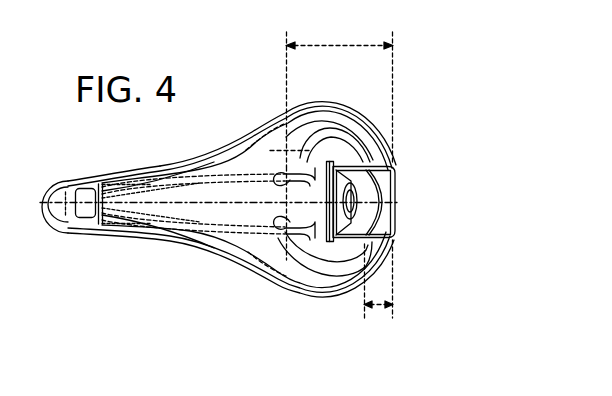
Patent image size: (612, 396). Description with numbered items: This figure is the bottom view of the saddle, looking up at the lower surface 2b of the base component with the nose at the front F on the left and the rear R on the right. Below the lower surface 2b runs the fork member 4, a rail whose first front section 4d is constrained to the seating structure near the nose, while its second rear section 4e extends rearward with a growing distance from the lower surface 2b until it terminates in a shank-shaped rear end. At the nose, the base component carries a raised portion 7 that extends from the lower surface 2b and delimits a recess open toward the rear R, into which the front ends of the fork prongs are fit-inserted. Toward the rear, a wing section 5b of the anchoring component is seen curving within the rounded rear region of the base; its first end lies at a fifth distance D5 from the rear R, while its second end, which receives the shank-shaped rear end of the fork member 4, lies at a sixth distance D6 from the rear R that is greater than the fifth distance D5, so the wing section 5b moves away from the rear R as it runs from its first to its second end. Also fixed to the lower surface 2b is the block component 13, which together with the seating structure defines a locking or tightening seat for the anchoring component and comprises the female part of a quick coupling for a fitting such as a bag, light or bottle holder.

The fork member 4 is at (224, 257).
The second rear section 4e is at (215, 160).
The first front section 4d is at (110, 217).
The raised portion 7 is at (80, 197).
The front F is at (44, 207).
The lower surface 2b is at (182, 210).
The wing section 5b is at (290, 260).
The block component 13 is at (396, 186).
The rear R is at (396, 231).
The fifth distance D5 is at (378, 295).
The sixth distance D6 is at (339, 91).